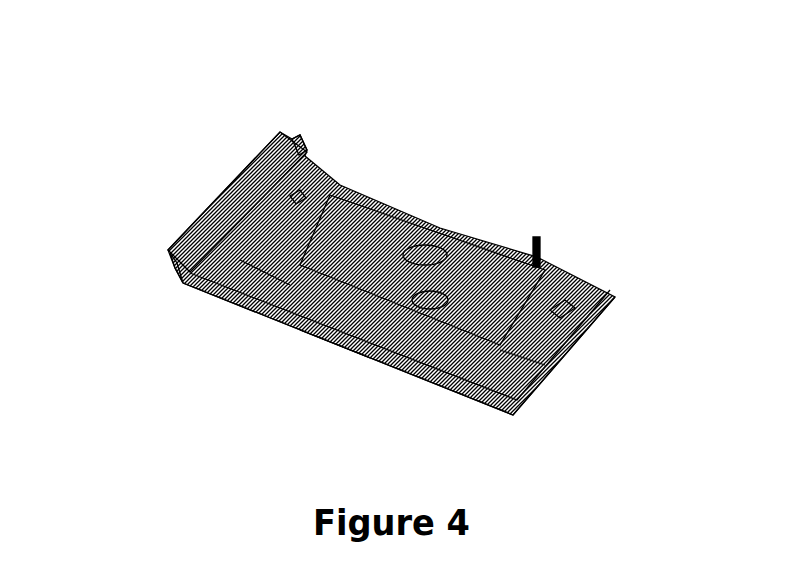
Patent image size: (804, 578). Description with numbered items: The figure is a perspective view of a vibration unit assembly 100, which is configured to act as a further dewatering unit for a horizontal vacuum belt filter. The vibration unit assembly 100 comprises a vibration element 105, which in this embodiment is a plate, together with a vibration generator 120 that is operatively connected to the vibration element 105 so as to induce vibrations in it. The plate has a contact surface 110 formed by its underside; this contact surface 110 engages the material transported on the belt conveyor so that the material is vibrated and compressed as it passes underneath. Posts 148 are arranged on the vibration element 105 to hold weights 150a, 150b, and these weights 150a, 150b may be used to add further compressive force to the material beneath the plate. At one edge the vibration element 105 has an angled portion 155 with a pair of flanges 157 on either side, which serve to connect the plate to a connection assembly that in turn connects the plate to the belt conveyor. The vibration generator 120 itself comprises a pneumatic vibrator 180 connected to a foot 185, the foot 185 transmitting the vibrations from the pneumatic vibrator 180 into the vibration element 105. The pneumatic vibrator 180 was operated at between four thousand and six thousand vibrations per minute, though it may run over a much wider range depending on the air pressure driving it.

The vibration unit assembly 100 is at (579, 168).
The vibration element 105 is at (395, 218).
The contact surface 110 is at (287, 327).
The vibration generator 120 is at (367, 327).
The post 148 is at (293, 198).
The weight 150a is at (273, 270).
The weight 150b is at (520, 360).
The angled portion 155 is at (254, 178).
The flange 157 is at (296, 137).
The pneumatic vibrator 180 is at (417, 248).
The foot 185 is at (423, 307).